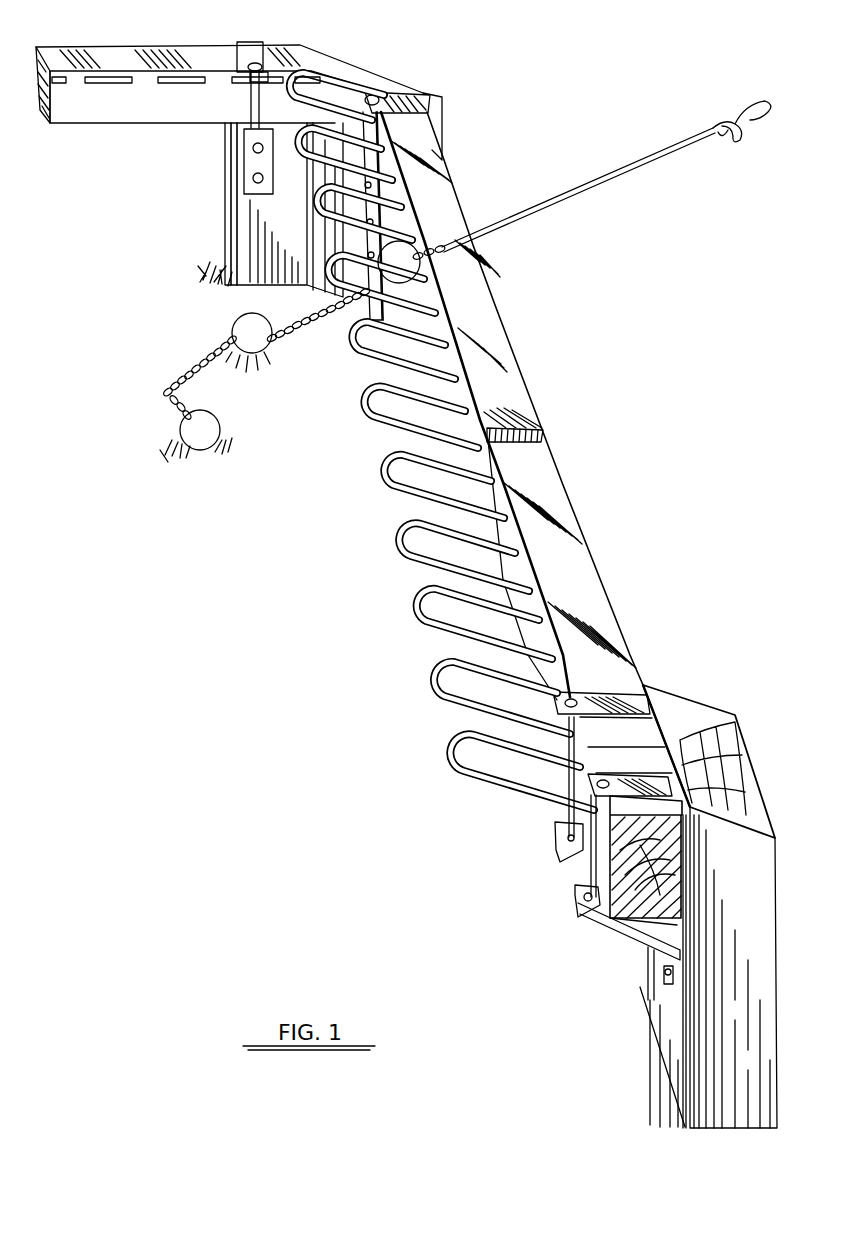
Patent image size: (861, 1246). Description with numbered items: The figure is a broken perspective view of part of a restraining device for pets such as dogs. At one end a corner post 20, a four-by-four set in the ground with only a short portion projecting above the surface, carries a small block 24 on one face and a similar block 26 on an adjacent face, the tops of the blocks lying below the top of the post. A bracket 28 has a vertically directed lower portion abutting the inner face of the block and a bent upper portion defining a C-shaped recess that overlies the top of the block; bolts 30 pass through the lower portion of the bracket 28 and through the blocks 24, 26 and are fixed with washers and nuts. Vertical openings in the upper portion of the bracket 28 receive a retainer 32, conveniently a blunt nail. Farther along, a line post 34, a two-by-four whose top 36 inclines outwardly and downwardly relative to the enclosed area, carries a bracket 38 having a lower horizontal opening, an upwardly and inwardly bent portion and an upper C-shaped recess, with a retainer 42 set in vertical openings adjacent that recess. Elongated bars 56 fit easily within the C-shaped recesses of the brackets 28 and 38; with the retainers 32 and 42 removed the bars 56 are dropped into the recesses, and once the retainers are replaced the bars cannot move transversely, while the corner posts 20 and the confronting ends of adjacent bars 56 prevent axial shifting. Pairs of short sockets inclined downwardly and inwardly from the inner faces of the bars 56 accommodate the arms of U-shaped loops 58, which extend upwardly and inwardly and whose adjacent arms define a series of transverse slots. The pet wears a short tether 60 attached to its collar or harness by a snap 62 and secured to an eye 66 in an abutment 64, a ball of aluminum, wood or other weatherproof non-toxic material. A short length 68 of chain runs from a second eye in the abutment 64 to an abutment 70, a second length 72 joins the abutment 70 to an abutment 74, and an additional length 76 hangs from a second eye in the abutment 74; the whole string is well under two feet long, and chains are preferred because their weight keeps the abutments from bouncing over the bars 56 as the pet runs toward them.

The corner post 20 is at (442, 110).
The block 24 is at (226, 197).
The block 26 is at (388, 312).
The bracket 28 is at (258, 44).
The bolts 30 is at (264, 148).
The retainer 32 is at (250, 105).
The line post 34 is at (763, 962).
The top of line post 36 is at (762, 797).
The bracket 38 is at (565, 838).
The retainer 42 is at (565, 775).
The elongated bars 56 is at (160, 56).
The U-shaped loops 58 is at (160, 80).
The tether 60 is at (634, 168).
The snap 62 is at (742, 123).
The abutment 64 is at (448, 278).
The eye 66 is at (445, 245).
The length of chain 68 is at (315, 328).
The abutment 70 is at (250, 318).
The second length of chain 72 is at (178, 372).
The abutment 74 is at (192, 450).
The additional length of chain 76 is at (224, 444).